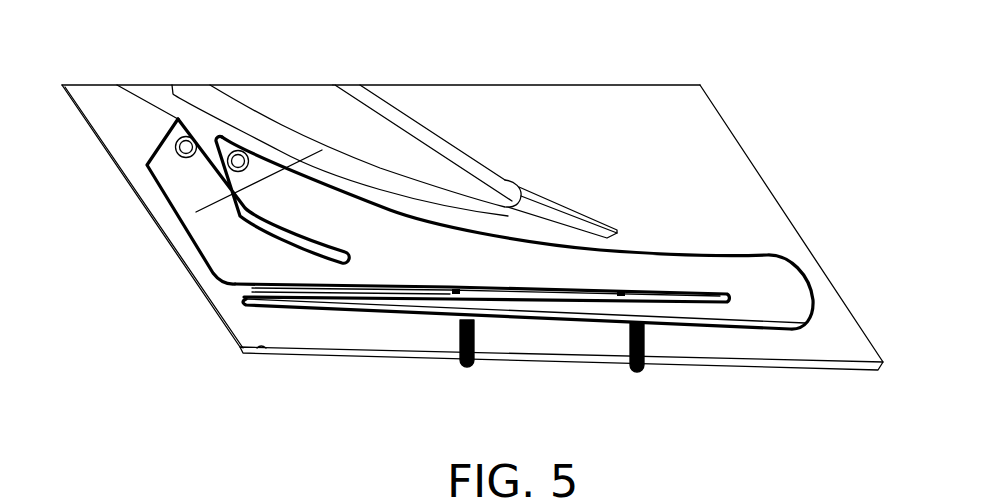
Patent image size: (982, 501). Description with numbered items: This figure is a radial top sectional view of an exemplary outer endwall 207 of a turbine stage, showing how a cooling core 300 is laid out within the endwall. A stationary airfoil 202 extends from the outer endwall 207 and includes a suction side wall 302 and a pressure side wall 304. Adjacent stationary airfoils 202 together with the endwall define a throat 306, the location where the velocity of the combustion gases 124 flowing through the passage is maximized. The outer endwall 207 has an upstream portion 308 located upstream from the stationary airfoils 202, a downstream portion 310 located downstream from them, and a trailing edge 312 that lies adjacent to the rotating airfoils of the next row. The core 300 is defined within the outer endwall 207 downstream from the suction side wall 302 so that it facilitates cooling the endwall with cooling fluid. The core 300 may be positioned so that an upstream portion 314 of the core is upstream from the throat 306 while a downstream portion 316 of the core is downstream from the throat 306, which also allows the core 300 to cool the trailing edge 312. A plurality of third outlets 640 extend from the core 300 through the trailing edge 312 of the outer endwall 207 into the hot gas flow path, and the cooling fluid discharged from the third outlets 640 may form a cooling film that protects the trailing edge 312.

The combustion gases 124 is at (142, 78).
The stationary airfoil 202 is at (294, 86).
The outer endwall 207 is at (617, 132).
The core 300 is at (134, 155).
The suction side wall 302 is at (240, 97).
The pressure side wall 304 is at (370, 112).
The throat 306 is at (213, 194).
The upstream portion 308 is at (567, 107).
The downstream portion 310 is at (833, 333).
The trailing edge 312 is at (263, 350).
The upstream portion 314 is at (136, 129).
The downstream portion 316 is at (198, 265).
The third outlet 640 is at (631, 372).